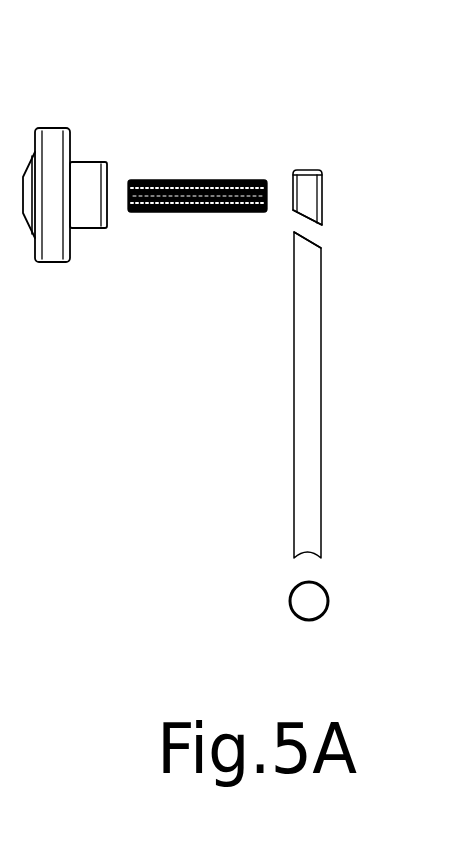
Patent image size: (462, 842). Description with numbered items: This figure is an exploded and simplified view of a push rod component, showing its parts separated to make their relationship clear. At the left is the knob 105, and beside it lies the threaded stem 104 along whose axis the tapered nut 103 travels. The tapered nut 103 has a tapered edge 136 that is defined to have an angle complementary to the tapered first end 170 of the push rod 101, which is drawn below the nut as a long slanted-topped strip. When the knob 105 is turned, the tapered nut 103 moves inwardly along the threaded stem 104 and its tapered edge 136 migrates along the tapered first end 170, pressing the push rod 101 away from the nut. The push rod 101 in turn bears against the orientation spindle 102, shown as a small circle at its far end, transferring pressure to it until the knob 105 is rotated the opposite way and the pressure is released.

The push rod 101 is at (305, 318).
The orientation spindle 102 is at (307, 602).
The tapered nut 103 is at (305, 168).
The threaded stem 104 is at (192, 180).
The knob 105 is at (55, 143).
The tapered edge 136 is at (317, 226).
The tapered first end 170 is at (308, 280).